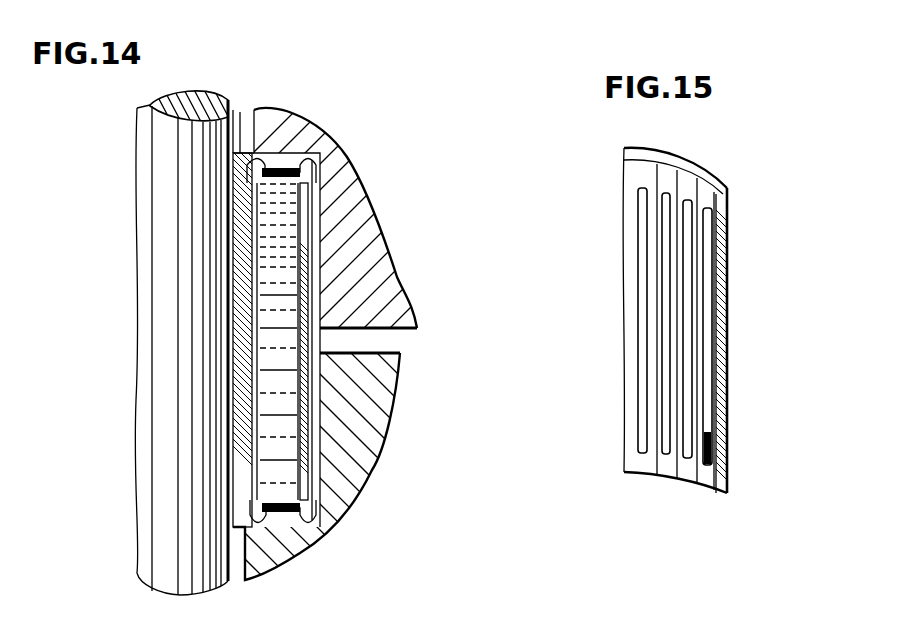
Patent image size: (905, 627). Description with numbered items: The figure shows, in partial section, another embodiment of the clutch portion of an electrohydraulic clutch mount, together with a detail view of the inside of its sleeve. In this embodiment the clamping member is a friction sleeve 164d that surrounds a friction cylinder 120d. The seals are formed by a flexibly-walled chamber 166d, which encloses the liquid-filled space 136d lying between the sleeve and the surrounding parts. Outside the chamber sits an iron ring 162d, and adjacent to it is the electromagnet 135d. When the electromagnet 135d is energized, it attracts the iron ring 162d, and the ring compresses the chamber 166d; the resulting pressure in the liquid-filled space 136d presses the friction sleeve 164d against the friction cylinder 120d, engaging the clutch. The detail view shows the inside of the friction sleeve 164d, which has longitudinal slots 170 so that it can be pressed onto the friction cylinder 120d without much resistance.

In FIG. 14, the friction cylinder 120d is at (160, 523).
In FIG. 14, the friction sleeve 164d is at (241, 130).
In FIG. 15, the friction sleeve 164d is at (733, 213).
In FIG. 14, the iron ring 162d is at (310, 138).
In FIG. 14, the liquid-filled space 136d is at (288, 339).
In FIG. 14, the electromagnet 135d is at (385, 378).
In FIG. 14, the flexibly-walled chamber 166d is at (318, 488).
In FIG. 15, the longitudinal slots 170 is at (705, 207).